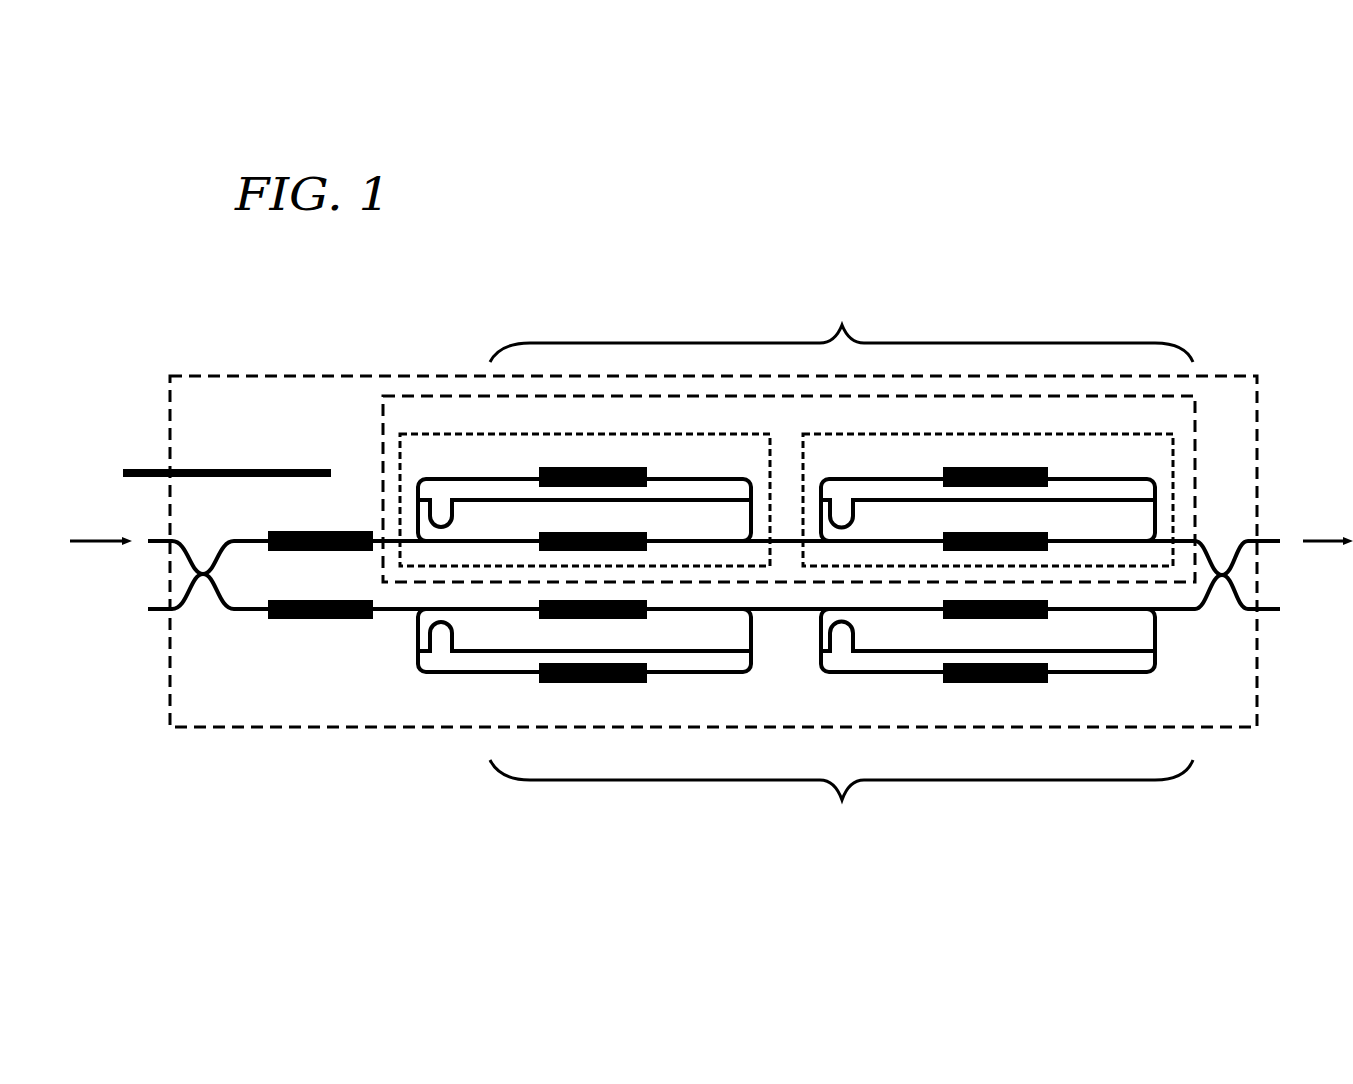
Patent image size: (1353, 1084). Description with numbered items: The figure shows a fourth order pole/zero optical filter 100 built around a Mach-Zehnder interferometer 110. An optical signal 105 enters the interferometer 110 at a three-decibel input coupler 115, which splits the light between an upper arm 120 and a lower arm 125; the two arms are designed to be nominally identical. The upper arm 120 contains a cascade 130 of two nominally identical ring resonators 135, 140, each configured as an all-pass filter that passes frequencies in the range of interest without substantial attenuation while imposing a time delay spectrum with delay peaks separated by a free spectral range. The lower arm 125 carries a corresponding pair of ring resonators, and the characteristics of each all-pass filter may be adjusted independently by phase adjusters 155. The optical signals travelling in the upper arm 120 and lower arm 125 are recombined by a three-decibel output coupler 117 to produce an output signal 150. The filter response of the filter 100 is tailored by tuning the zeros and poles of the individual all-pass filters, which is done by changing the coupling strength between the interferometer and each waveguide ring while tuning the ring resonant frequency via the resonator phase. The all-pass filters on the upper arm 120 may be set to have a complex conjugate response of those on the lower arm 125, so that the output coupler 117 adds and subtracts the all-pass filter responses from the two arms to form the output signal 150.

The pole/zero filter 100 is at (369, 280).
The optical signal 105 is at (86, 541).
The Mach-Zehnder interferometer 110 is at (170, 420).
The 3-dB input coupler 115 is at (204, 577).
The 3-dB output coupler 117 is at (1222, 578).
The upper arm 120 is at (352, 520).
The lower arm 125 is at (352, 629).
The cascade 130 is at (383, 418).
The ring resonator 135 is at (494, 434).
The ring resonator 140 is at (913, 434).
The output signal 150 is at (1330, 541).
The phase adjuster 155 is at (943, 676).